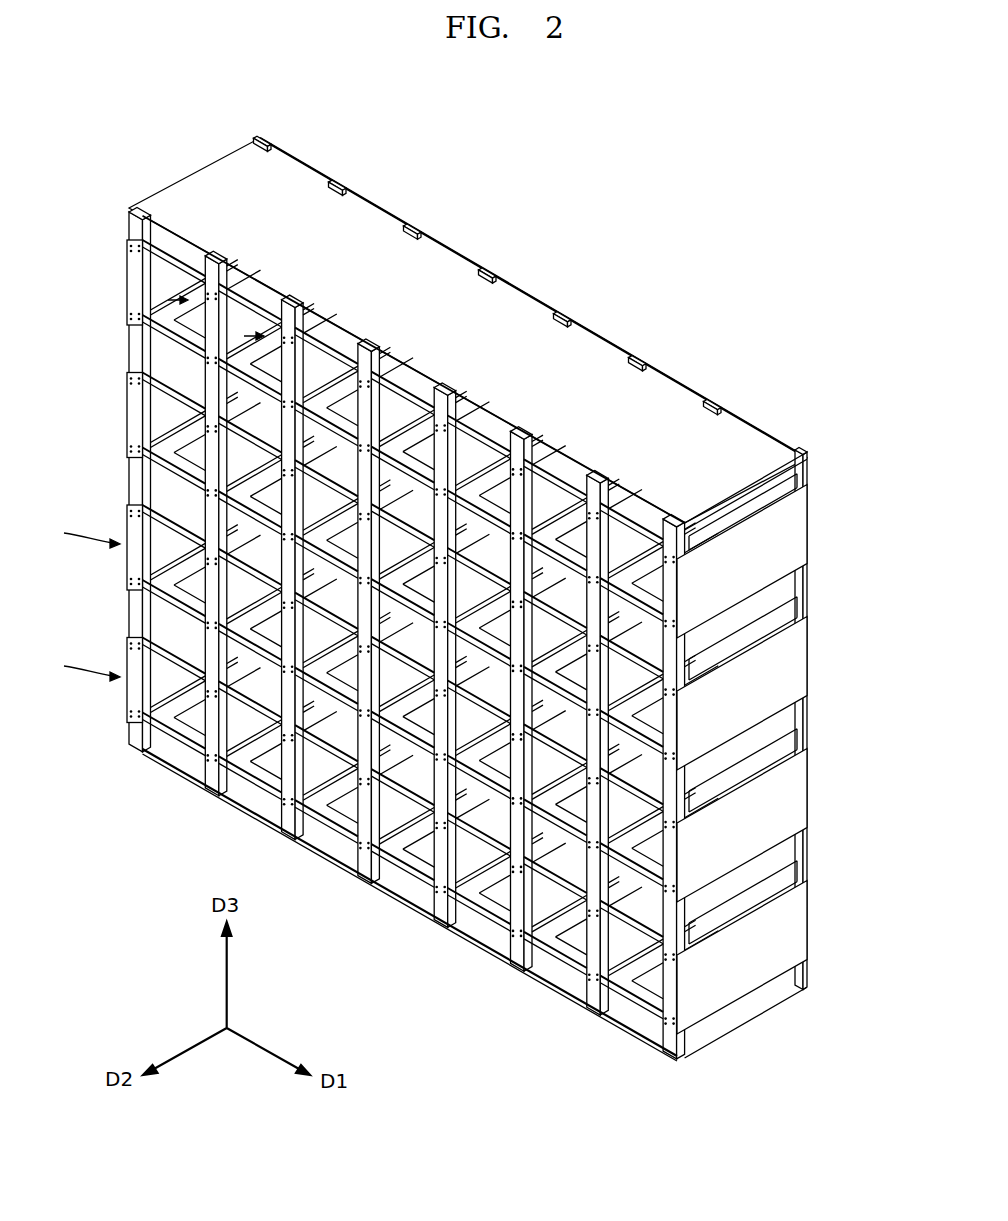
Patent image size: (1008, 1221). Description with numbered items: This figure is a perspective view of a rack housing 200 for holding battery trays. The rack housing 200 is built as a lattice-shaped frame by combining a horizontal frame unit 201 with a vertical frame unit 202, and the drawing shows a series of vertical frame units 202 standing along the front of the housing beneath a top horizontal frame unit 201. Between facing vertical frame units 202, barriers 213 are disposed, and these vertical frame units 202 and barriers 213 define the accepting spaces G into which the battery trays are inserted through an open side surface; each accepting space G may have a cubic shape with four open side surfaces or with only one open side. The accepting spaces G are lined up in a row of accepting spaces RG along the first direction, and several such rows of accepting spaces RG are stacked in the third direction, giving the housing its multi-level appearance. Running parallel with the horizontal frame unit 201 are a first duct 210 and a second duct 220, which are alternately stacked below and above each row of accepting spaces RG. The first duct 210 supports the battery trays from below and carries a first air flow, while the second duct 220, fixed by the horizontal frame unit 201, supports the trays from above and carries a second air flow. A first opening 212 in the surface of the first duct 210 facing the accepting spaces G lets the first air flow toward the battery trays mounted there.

The rack housing 200 is at (632, 262).
The horizontal frame unit 201 is at (167, 257).
The vertical frame unit 202 is at (343, 181).
The first duct 210 is at (790, 581).
The first opening 212 is at (183, 448).
The barrier 213 is at (237, 468).
The second duct 220 is at (793, 473).
The accepting space G is at (248, 336).
The row of accepting spaces RG is at (75, 601).